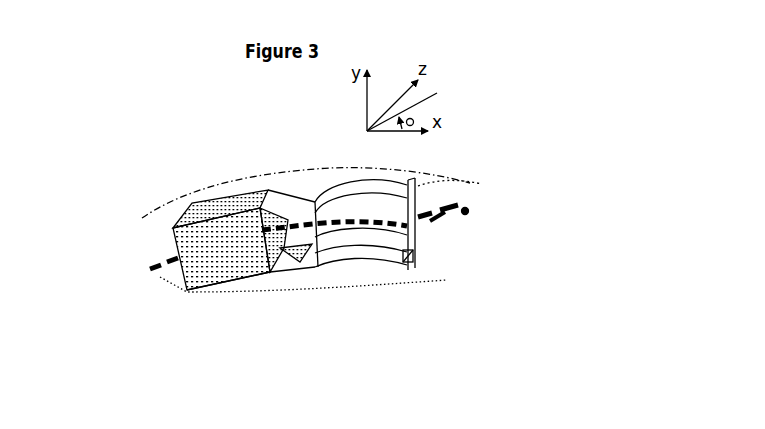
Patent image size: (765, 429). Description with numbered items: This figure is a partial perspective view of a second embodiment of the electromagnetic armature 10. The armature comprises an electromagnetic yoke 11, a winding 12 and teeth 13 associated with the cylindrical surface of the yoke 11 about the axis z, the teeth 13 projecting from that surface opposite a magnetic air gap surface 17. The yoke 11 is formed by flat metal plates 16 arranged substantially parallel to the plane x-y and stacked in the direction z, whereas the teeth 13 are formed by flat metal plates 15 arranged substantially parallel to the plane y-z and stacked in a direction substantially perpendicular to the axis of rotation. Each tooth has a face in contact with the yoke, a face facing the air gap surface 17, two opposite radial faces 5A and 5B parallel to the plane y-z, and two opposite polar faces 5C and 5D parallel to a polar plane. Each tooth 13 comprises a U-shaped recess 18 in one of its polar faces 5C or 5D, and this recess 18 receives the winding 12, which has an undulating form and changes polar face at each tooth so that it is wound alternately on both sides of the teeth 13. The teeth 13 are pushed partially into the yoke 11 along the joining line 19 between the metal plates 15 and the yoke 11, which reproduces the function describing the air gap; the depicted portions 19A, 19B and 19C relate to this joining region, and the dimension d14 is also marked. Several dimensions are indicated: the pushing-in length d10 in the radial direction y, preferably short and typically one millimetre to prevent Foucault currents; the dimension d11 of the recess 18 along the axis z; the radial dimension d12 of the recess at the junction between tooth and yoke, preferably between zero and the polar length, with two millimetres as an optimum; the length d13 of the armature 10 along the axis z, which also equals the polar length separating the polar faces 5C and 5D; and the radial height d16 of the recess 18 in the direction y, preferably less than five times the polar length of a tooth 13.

The electromagnetic armature 10 is at (91, 250).
The electromagnetic yoke 11 is at (376, 281).
The winding 12 is at (465, 208).
The teeth 13 is at (203, 198).
The flat metal plates 15 is at (258, 186).
The flat metal plates 16 is at (284, 258).
The magnetic air gap surface 17 is at (218, 190).
The recess 18 is at (414, 256).
The joining line 19 is at (245, 285).
The intermediate layer 19A is at (360, 238).
The intermediate layer 19B is at (300, 262).
The intermediate layer 19C is at (445, 216).
The radial face 5A is at (172, 242).
The radial face 5B is at (272, 222).
The polar face 5C is at (274, 205).
The polar face 5D is at (365, 257).
The pushing-in length d10 is at (307, 268).
The dimension of the recess along the axis z d11 is at (287, 226).
The dimension of the recess in the radial direction d12 is at (405, 262).
The length in the direction z d13 is at (204, 194).
The thickness d14 is at (404, 222).
The radial height of the recess d16 is at (270, 258).